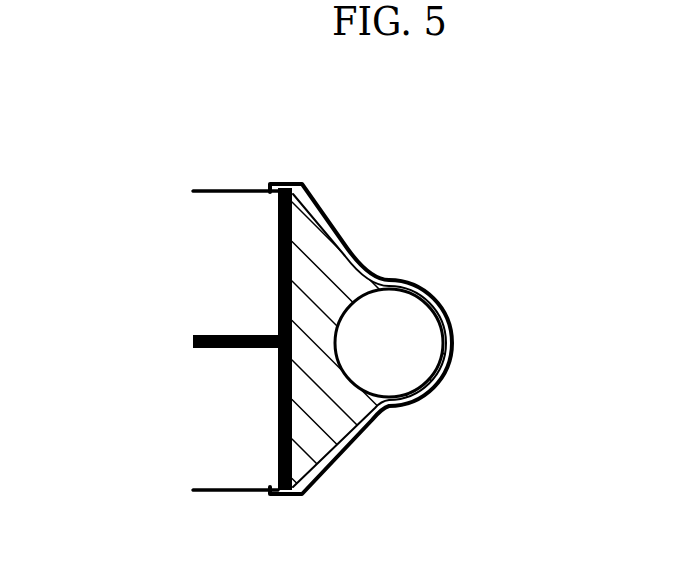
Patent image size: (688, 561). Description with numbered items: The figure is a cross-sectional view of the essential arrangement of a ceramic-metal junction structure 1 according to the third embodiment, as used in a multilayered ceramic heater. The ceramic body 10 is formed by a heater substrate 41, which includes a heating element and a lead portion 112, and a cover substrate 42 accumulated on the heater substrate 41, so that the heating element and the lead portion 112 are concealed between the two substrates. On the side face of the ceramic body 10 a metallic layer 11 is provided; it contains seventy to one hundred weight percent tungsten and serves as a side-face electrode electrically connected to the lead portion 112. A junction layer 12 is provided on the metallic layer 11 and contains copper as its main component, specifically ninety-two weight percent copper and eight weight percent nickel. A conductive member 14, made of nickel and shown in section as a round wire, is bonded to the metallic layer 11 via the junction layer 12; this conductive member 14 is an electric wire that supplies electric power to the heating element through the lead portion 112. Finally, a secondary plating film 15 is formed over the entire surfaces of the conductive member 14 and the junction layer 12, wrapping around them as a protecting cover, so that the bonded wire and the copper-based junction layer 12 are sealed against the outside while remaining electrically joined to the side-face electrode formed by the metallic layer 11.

The ceramic-metal junction structure 1 is at (401, 195).
The ceramic body 10 is at (233, 223).
The metallic layer 11 is at (295, 268).
The junction layer 12 is at (327, 420).
The conductive member 14 is at (407, 342).
The secondary plating film 15 is at (385, 410).
The lead portion 112 is at (223, 348).
The heater substrate 41 is at (195, 433).
The cover substrate 42 is at (200, 290).